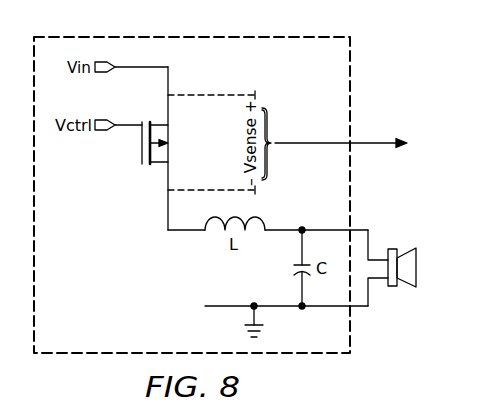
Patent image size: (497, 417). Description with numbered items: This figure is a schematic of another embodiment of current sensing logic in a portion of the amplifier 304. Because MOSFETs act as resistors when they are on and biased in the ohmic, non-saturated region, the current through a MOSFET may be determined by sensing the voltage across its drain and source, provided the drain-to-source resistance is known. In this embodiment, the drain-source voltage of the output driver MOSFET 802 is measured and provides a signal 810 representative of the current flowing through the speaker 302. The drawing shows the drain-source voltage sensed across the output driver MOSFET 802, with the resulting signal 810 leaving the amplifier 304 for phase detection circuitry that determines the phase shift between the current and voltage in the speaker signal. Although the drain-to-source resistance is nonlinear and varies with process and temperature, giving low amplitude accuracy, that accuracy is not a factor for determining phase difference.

The amplifier 304 is at (133, 304).
The output driver MOSFET 802 is at (141, 152).
The signal 810 is at (378, 141).
The speaker 302 is at (417, 268).